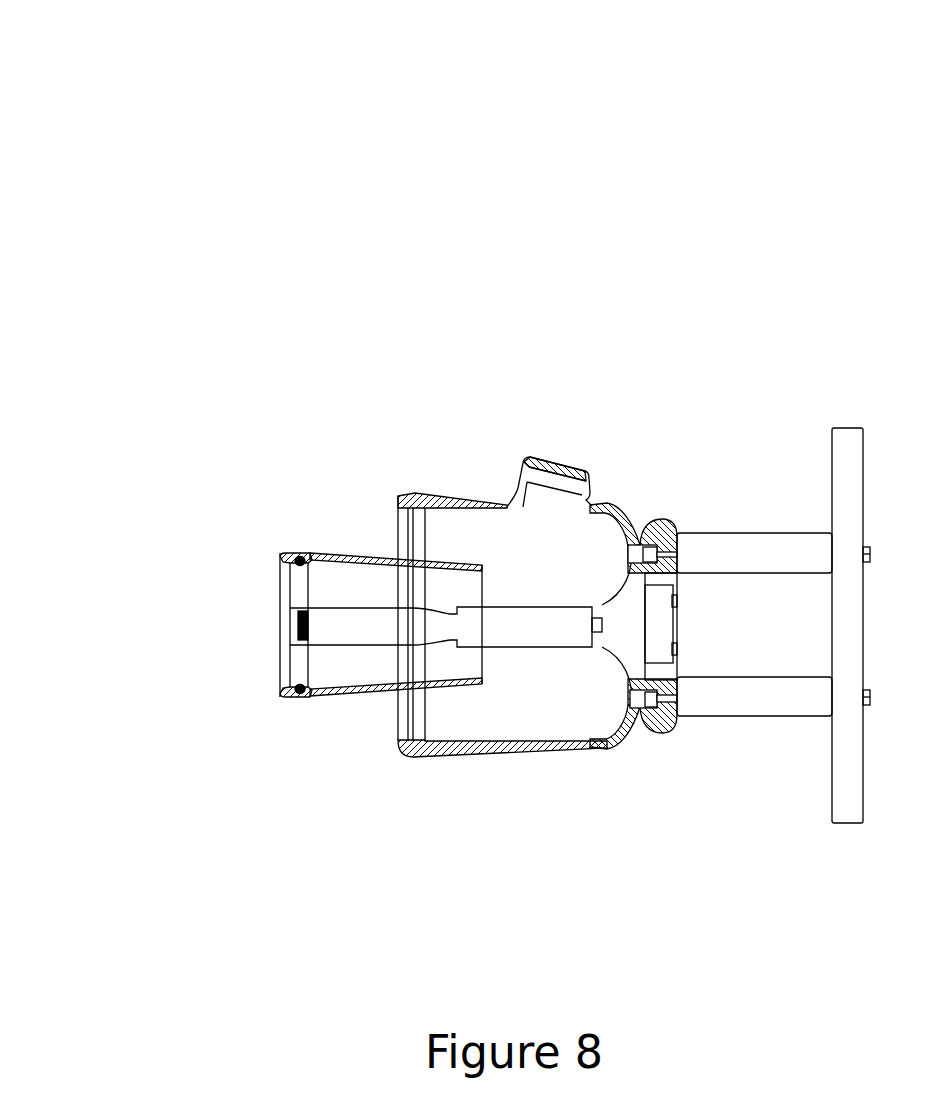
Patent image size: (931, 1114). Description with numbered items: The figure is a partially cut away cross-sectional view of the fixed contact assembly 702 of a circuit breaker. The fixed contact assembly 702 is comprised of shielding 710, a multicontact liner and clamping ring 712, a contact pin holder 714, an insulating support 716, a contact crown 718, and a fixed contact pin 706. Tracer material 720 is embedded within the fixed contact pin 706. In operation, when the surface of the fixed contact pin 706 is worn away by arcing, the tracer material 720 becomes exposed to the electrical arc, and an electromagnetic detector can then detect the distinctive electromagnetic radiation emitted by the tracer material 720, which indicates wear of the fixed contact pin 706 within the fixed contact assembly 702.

The fixed contact assembly 702 is at (286, 261).
The fixed contact pin 706 is at (332, 620).
The shielding 710 is at (283, 552).
The multicontact liner and clamping ring 712 is at (553, 458).
The contact pin holder 714 is at (619, 621).
The insulating support 716 is at (717, 550).
The contact crown 718 is at (298, 689).
The tracer material 720 is at (297, 623).